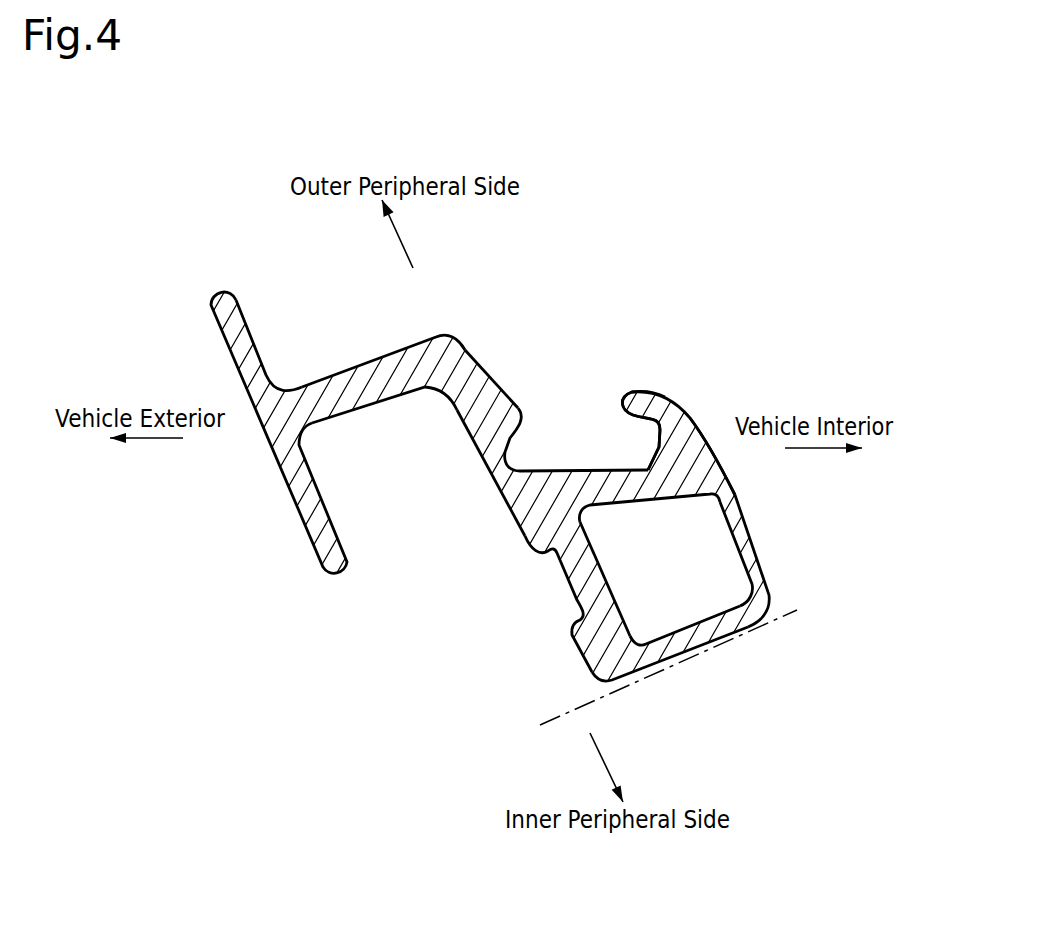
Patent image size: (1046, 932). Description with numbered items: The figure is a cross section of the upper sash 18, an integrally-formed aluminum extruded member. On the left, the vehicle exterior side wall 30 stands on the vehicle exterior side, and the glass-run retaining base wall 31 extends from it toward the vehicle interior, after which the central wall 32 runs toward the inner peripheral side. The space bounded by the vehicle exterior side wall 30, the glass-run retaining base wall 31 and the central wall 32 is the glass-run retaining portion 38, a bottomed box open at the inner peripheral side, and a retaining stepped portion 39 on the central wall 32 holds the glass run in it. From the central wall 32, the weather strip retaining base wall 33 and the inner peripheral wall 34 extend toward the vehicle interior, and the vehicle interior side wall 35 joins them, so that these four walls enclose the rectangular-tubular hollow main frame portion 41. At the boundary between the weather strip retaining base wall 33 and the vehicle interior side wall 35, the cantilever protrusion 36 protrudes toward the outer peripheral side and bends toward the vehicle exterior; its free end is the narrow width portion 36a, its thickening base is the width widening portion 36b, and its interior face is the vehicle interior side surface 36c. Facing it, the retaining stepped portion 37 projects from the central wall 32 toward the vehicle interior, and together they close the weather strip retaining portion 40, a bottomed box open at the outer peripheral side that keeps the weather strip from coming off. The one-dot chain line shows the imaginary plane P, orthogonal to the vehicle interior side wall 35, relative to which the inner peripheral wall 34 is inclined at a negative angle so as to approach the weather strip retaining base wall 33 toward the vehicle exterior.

The upper sash 18 is at (195, 345).
The vehicle exterior side wall 30 is at (290, 458).
The glass-run retaining base wall 31 is at (350, 382).
The central wall 32 is at (520, 508).
The weather strip retaining base wall 33 is at (615, 480).
The inner peripheral wall 34 is at (723, 626).
The vehicle interior side wall 35 is at (737, 523).
The cantilever protrusion 36 is at (757, 343).
The narrow width portion 36a is at (645, 407).
The width widening portion 36b is at (694, 450).
The vehicle interior side surface 36c is at (686, 410).
The retaining stepped portion 37 is at (522, 422).
The glass-run retaining portion 38 is at (398, 565).
The retaining stepped portion 39 is at (577, 626).
The weather strip retaining portion 40 is at (573, 395).
The main frame portion 41 is at (778, 543).
The imaginary plane P is at (623, 687).